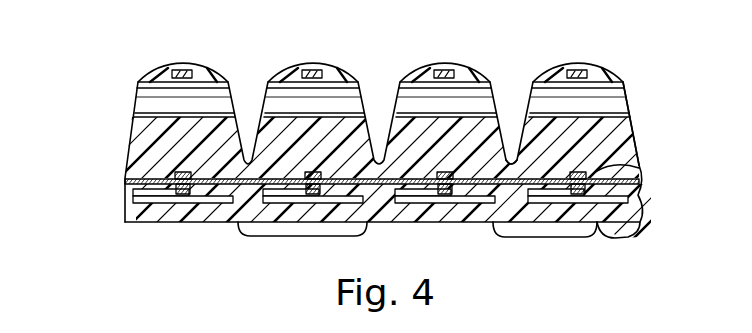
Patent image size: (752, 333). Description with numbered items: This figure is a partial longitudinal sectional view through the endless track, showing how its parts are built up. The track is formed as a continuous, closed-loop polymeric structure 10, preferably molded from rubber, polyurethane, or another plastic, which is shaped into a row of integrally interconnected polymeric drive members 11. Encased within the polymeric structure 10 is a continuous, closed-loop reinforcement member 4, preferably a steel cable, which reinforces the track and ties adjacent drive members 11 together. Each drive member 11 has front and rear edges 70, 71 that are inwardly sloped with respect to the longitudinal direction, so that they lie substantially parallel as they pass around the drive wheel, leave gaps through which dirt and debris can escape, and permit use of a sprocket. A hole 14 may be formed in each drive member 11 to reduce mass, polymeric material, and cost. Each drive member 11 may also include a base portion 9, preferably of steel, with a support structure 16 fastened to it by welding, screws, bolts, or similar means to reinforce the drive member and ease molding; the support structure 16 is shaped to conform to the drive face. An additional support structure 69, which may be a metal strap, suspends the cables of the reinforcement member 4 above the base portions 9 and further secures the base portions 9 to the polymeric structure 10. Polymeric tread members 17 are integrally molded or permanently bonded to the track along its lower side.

The reinforcement member 4 is at (520, 184).
The base portion 9 is at (598, 214).
The polymeric structure 10 is at (125, 172).
The polymeric drive member 11 is at (182, 66).
The hole 14 is at (150, 102).
The support structure 16 is at (442, 69).
The polymeric tread member 17 is at (224, 227).
The additional support structure 69 is at (632, 165).
The front edge 70 is at (512, 158).
The rear edge 71 is at (637, 141).